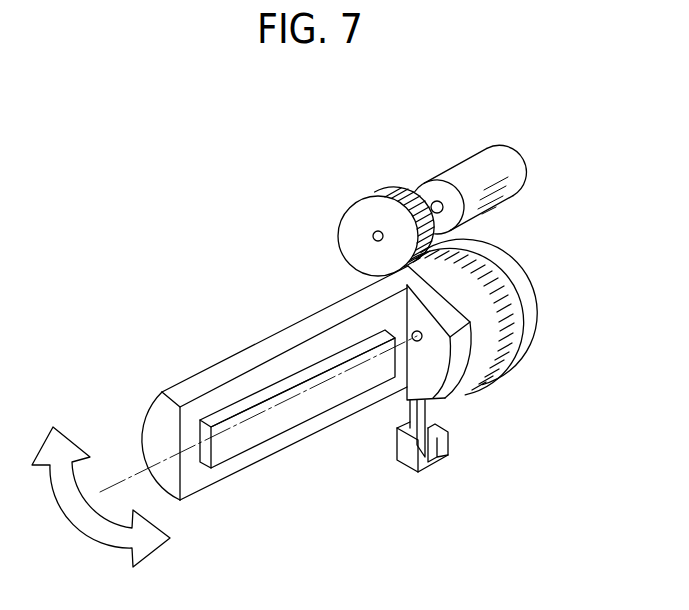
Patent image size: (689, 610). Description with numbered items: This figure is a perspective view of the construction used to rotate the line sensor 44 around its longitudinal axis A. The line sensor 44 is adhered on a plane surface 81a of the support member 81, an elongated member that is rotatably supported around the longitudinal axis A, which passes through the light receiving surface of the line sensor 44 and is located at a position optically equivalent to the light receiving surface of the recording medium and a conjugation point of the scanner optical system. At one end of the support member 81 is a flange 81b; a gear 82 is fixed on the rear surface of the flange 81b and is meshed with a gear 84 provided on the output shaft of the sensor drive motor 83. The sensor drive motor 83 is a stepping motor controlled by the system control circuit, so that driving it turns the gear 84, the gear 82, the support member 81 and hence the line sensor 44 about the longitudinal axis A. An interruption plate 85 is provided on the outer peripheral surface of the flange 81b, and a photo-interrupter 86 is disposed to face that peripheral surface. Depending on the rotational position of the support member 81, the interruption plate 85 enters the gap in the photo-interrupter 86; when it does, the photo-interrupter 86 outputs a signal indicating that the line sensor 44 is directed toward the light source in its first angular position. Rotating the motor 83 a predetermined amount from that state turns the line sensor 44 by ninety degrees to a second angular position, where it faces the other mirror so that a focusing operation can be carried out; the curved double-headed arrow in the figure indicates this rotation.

The line sensor 44 is at (227, 443).
The support member 81 is at (198, 371).
The plane surface 81a is at (275, 370).
The flange 81b is at (435, 358).
The gear 82 is at (458, 287).
The sensor drive motor 83 is at (468, 168).
The gear 84 is at (361, 212).
The interruption plate 85 is at (421, 410).
The photo-interrupter 86 is at (405, 453).
The longitudinal axis A is at (292, 397).